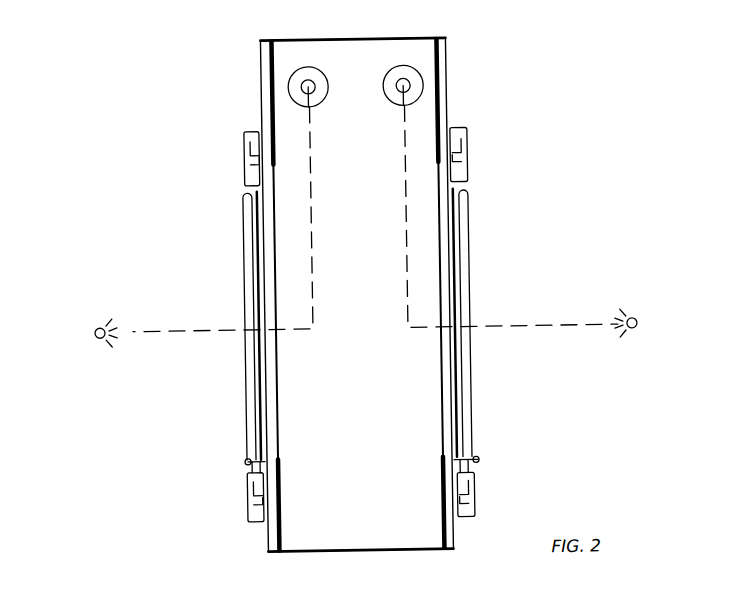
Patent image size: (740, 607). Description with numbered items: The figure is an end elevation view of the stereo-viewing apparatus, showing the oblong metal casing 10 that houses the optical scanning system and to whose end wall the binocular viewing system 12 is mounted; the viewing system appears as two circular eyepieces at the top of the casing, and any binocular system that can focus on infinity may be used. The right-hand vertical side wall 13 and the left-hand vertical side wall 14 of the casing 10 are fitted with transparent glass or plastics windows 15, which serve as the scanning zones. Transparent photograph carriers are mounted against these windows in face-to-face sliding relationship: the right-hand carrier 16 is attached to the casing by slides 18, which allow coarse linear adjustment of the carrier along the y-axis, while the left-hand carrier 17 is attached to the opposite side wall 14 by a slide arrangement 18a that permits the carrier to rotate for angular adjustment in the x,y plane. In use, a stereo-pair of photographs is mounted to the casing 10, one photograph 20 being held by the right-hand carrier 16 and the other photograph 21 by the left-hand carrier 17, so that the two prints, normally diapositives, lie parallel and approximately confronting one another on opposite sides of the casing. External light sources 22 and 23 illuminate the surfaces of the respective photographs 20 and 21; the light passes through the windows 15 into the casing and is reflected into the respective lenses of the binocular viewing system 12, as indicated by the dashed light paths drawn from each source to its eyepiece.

The casing 10 is at (448, 556).
The binocular viewing system 12 is at (409, 62).
The right-hand vertical side wall 13 is at (444, 91).
The left-hand vertical side wall 14 is at (274, 76).
The windows 15 is at (270, 104).
The right-hand carrier 16 is at (466, 396).
The left-hand carrier 17 is at (249, 403).
The slides 18 is at (458, 158).
The slide arrangement 18a is at (255, 158).
The photograph 20 is at (454, 261).
The photograph 21 is at (260, 221).
The external light source 22 is at (539, 220).
The external light source 23 is at (184, 227).